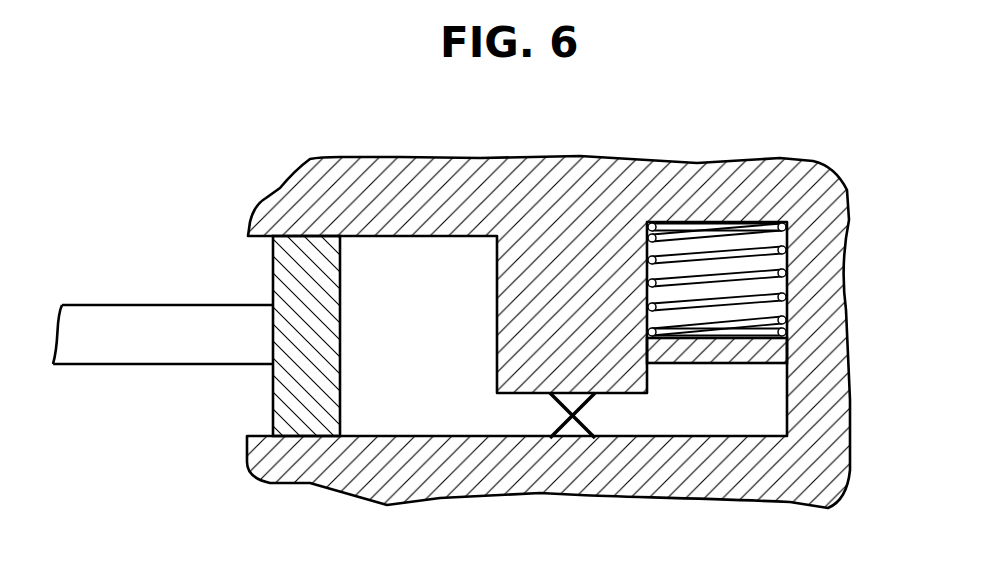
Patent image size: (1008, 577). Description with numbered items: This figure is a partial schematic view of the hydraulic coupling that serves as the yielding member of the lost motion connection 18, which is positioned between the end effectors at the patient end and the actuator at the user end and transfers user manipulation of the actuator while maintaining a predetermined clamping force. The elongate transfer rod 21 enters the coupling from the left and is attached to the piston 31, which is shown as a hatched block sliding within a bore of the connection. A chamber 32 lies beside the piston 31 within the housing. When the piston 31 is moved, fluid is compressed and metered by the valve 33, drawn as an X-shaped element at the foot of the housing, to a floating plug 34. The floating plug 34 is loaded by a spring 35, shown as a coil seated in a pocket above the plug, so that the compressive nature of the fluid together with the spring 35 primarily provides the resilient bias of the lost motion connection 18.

The lost motion connection 18 is at (432, 140).
The elongate transfer rod 21 is at (143, 313).
The piston 31 is at (287, 278).
The chamber 32 is at (428, 350).
The valve 33 is at (566, 418).
The floating plug 34 is at (787, 363).
The spring 35 is at (782, 273).